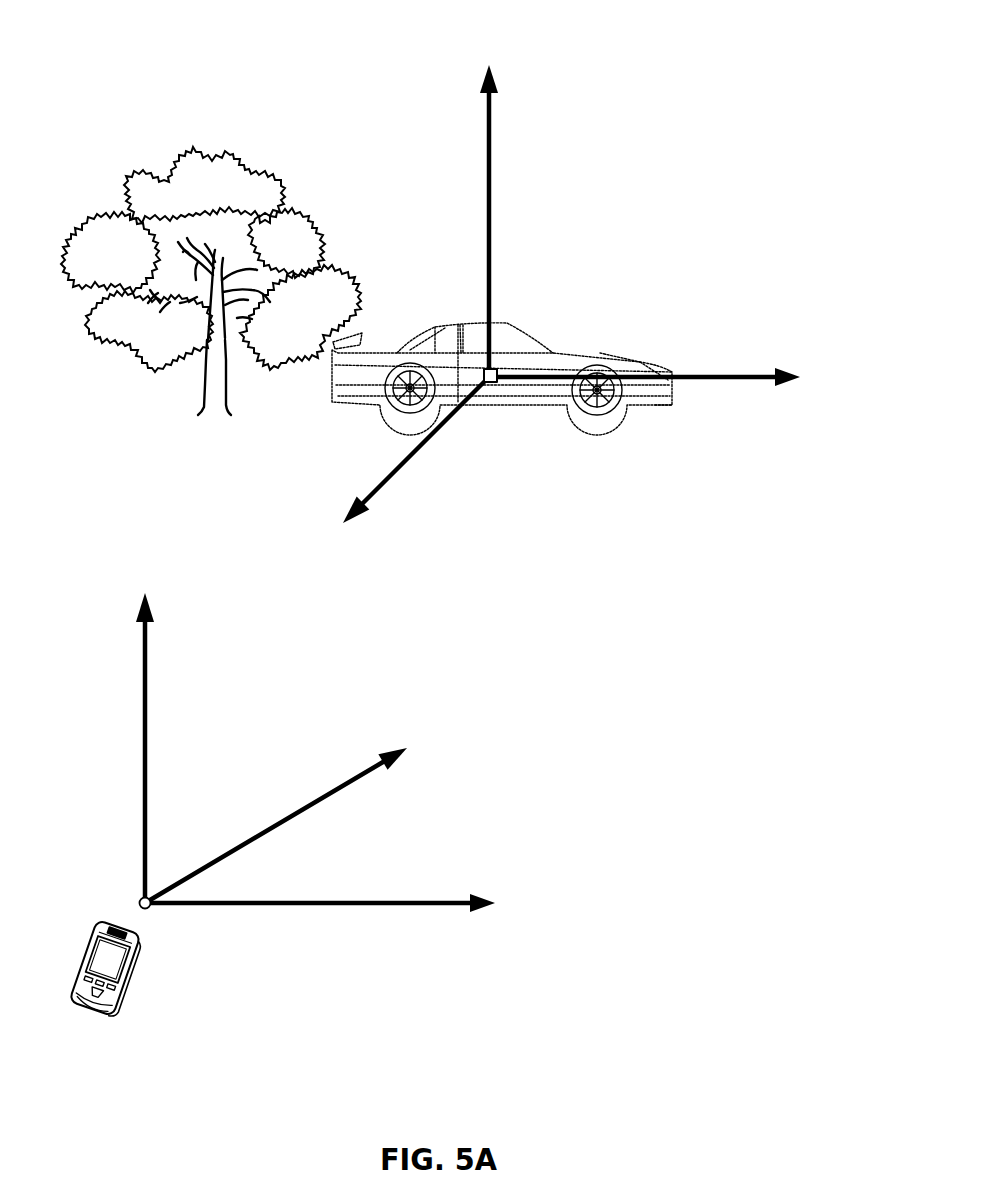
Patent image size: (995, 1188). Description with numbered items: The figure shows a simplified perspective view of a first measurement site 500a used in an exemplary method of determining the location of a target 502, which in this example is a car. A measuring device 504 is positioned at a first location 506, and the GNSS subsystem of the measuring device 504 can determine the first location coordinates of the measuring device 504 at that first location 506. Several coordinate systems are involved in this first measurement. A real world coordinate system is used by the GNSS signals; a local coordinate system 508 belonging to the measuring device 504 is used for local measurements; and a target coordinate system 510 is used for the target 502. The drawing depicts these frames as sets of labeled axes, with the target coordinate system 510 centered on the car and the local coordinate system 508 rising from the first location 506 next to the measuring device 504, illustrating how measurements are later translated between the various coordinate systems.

The first measurement site 500a is at (733, 62).
The target 502 is at (602, 355).
The measuring device 504 is at (93, 932).
The first location 506 is at (140, 900).
The local coordinate system 508 is at (147, 710).
The target coordinate system 510 is at (491, 198).